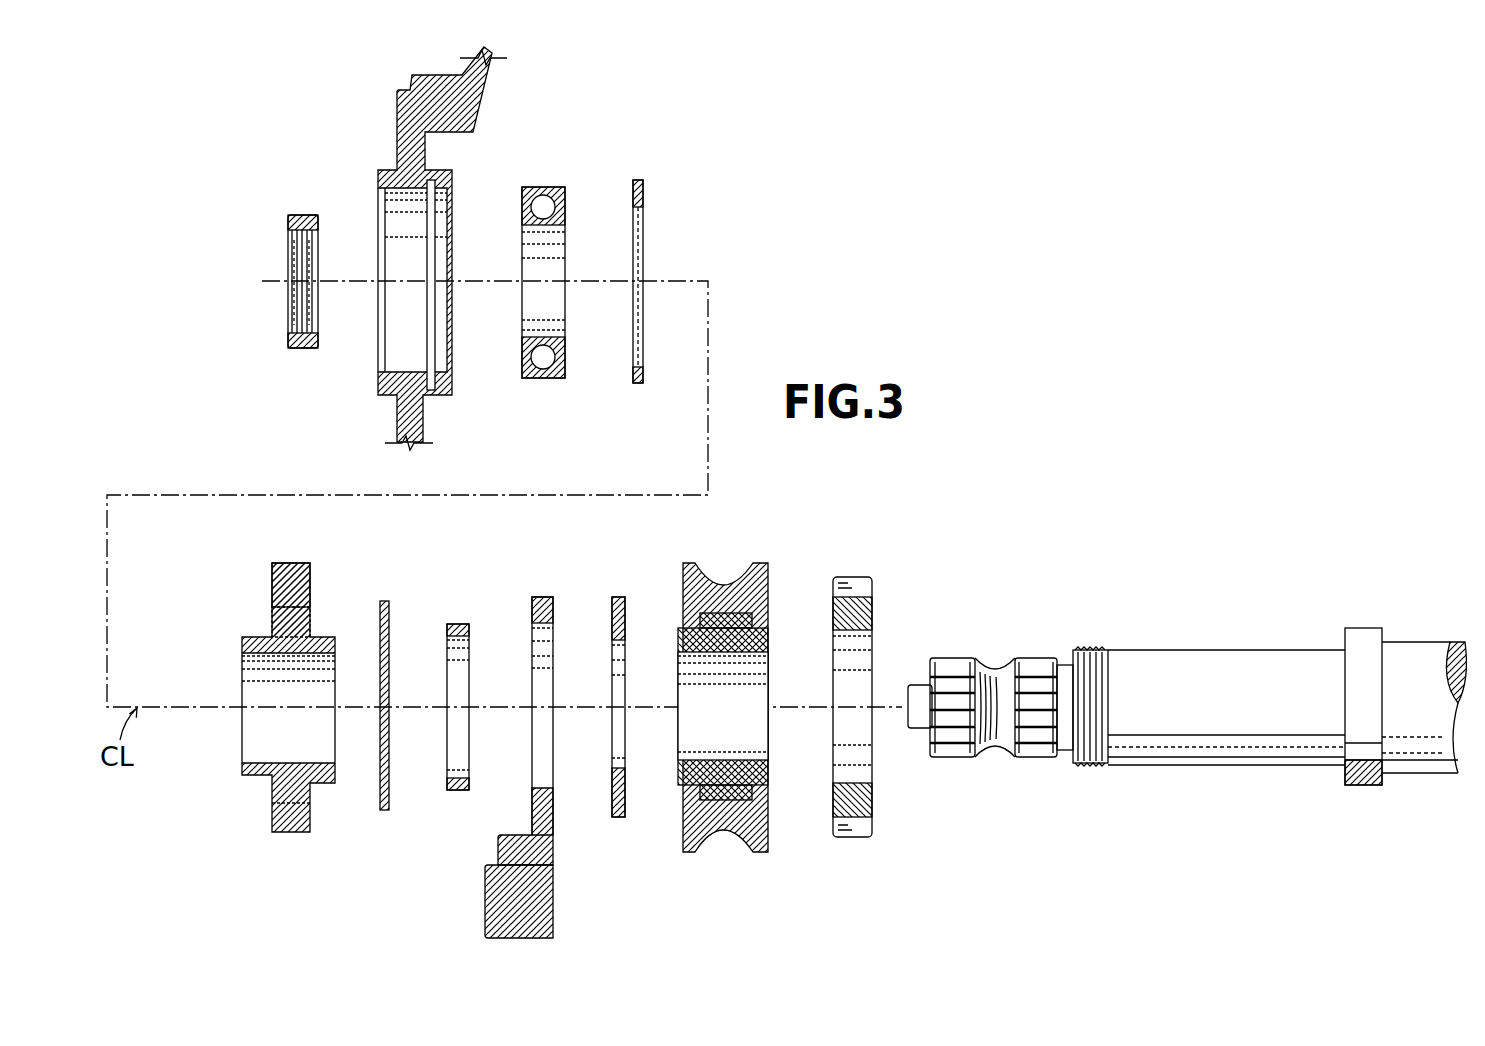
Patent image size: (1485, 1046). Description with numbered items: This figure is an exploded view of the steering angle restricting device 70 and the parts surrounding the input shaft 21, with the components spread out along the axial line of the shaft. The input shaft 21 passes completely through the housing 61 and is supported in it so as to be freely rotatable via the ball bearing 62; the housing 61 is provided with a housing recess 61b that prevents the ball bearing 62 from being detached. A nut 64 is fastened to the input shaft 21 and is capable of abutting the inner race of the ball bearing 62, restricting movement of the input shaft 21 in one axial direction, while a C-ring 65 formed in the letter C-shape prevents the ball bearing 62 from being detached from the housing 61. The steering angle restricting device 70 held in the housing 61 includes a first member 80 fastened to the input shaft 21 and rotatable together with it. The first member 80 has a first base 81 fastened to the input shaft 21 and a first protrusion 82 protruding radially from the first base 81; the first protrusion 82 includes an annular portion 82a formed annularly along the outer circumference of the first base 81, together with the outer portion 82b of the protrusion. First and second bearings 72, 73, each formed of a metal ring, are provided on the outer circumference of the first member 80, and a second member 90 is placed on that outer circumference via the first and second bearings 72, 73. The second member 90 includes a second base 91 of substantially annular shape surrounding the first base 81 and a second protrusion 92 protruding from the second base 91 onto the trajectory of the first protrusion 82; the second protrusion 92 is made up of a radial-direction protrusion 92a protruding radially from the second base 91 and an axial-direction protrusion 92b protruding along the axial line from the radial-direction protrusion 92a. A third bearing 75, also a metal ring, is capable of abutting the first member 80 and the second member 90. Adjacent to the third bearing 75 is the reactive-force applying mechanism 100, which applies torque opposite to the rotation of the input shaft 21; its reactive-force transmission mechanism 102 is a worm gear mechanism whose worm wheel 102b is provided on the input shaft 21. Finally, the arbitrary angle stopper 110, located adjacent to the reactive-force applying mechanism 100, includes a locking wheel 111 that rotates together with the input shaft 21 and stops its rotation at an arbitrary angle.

The input shaft 21 is at (1246, 767).
The housing 61 is at (419, 246).
The housing recess 61b is at (378, 207).
The ball bearing 62 is at (543, 187).
The nut 64 is at (303, 215).
The C-ring 65 is at (643, 190).
The steering angle restricting device 70 is at (328, 902).
The first bearing 72 is at (385, 601).
The second bearing 73 is at (458, 624).
The third bearing 75 is at (618, 597).
The first member 80 is at (237, 717).
The first base 81 is at (257, 776).
The first protrusion 82 is at (225, 665).
The annular portion 82a is at (250, 614).
The flange outer portion 82b is at (273, 578).
The second member 90 is at (501, 739).
The second base 91 is at (541, 597).
The second protrusion 92 is at (460, 863).
The radial-direction protrusion 92a is at (500, 845).
The axial-direction protrusion 92b is at (484, 901).
The reactive-force applying mechanism 100 is at (771, 739).
The reactive-force transmission mechanism 102 is at (771, 739).
The worm wheel 102b is at (686, 853).
The arbitrary angle stopper 110 is at (911, 731).
The locking wheel 111 is at (862, 838).